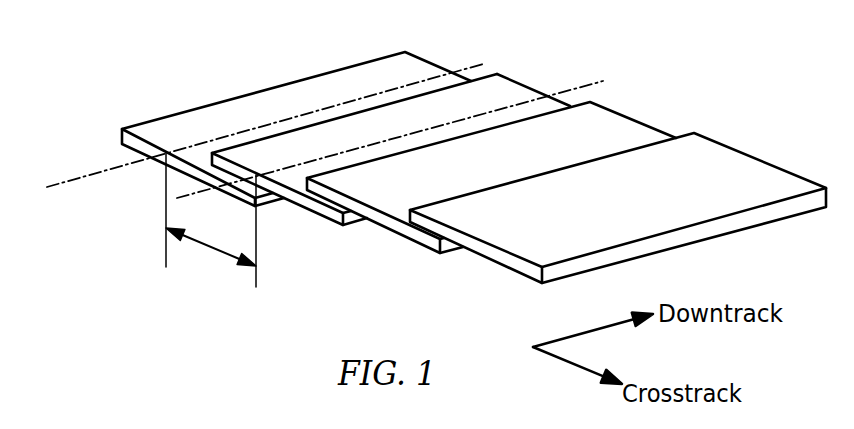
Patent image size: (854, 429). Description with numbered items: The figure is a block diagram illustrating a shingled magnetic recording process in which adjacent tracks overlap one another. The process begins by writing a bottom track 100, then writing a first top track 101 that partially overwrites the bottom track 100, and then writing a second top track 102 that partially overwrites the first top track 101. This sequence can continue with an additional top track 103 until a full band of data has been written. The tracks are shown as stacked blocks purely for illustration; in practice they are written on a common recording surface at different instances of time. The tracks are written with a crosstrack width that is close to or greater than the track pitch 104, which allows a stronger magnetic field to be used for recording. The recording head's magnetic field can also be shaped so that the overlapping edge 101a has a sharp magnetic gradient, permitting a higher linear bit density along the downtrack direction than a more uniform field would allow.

The bottom track 100 is at (421, 58).
The first top track 101 is at (390, 129).
The overlapping edge 101a is at (347, 115).
The second top track 102 is at (627, 118).
The additional top track 103 is at (720, 147).
The track pitch 104 is at (203, 246).